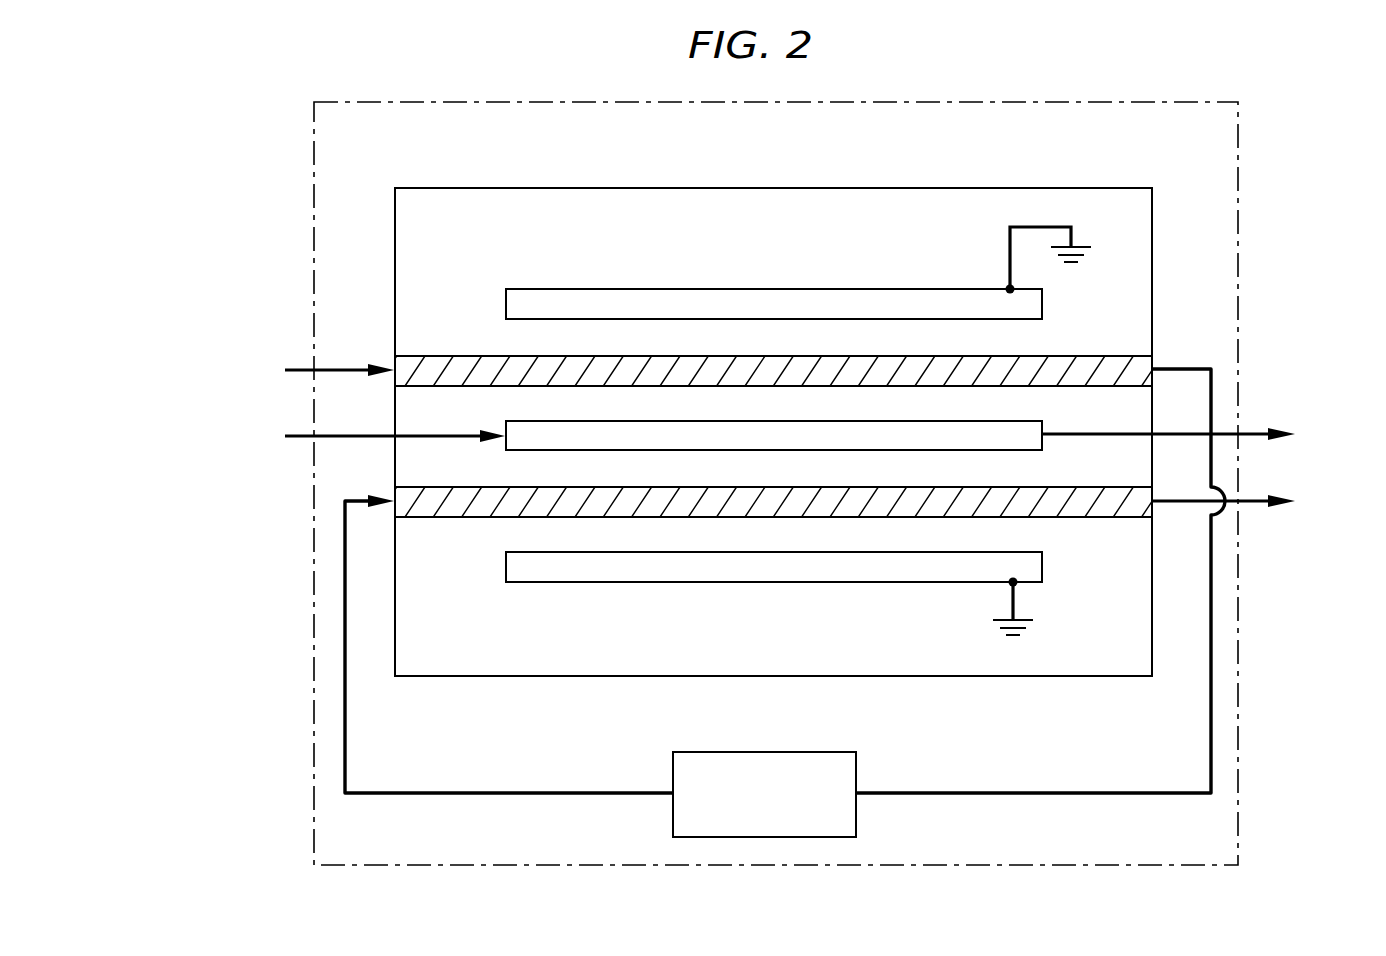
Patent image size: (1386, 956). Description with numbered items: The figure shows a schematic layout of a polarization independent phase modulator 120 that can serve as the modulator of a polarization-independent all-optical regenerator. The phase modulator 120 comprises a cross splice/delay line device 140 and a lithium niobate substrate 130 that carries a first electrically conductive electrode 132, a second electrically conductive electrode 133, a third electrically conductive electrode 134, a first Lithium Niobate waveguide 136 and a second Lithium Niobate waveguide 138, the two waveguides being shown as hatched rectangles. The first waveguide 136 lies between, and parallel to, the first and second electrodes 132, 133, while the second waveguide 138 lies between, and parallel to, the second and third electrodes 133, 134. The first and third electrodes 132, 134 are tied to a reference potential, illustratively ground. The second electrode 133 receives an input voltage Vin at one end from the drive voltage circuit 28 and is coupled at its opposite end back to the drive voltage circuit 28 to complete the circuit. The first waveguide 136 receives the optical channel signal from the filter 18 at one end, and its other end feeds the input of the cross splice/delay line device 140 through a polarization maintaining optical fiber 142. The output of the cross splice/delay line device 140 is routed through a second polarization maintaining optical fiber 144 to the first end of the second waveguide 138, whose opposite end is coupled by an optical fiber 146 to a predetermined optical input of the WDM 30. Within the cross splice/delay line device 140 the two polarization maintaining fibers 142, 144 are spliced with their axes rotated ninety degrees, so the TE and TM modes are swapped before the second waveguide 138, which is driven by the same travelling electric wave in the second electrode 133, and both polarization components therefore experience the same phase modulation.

The polarization independent phase modulator 120 is at (1175, 102).
The lithium niobate substrate 130 is at (521, 188).
The first electrically conductive electrode 132 is at (551, 289).
The second electrically conductive electrode 133 is at (513, 421).
The third electrically conductive electrode 134 is at (550, 583).
The first Lithium Niobate waveguide 136 is at (470, 356).
The second Lithium Niobate waveguide 138 is at (470, 517).
The cross splice/delay line device 140 is at (712, 752).
The polarization maintaining optical fiber 142 is at (1000, 793).
The polarization maintaining optical fiber 144 is at (530, 794).
The optical fiber 146 is at (1250, 504).
The filter 18 is at (279, 390).
The drive voltage circuit 28 is at (247, 508).
The WDM 30 is at (1357, 575).